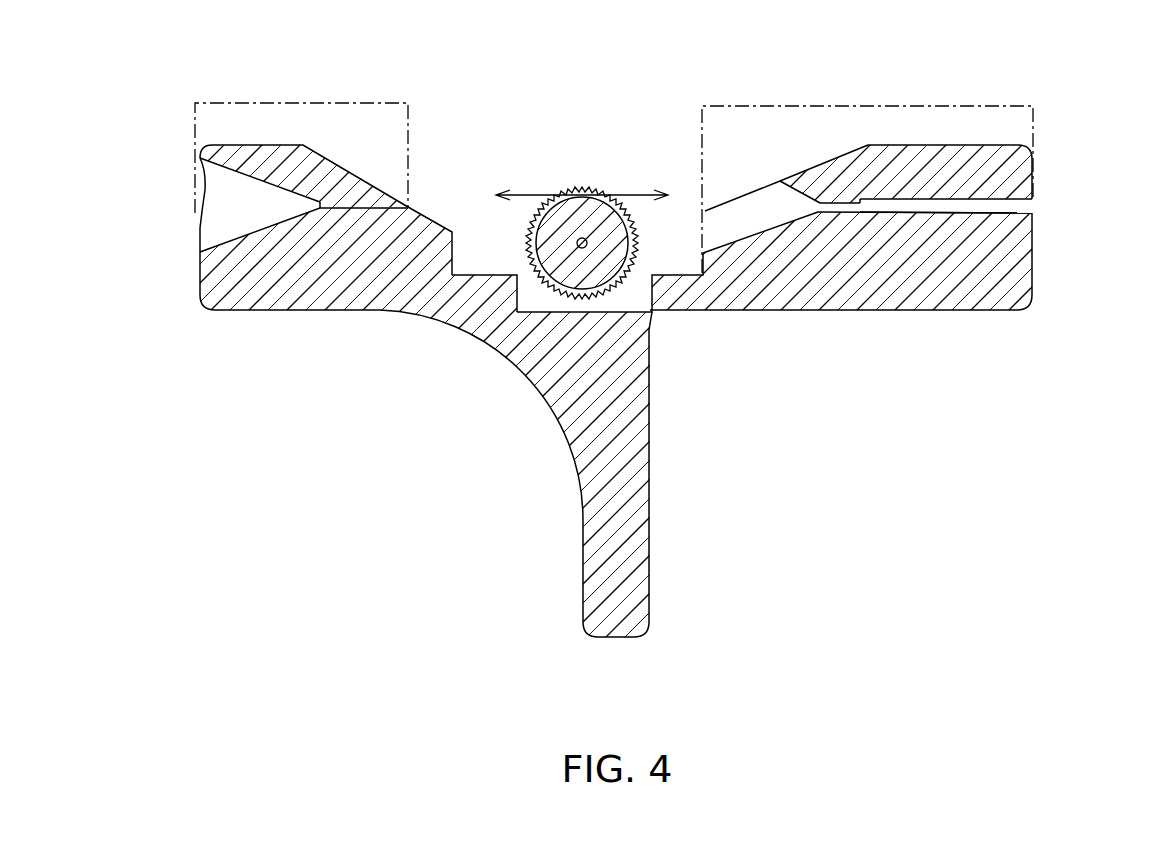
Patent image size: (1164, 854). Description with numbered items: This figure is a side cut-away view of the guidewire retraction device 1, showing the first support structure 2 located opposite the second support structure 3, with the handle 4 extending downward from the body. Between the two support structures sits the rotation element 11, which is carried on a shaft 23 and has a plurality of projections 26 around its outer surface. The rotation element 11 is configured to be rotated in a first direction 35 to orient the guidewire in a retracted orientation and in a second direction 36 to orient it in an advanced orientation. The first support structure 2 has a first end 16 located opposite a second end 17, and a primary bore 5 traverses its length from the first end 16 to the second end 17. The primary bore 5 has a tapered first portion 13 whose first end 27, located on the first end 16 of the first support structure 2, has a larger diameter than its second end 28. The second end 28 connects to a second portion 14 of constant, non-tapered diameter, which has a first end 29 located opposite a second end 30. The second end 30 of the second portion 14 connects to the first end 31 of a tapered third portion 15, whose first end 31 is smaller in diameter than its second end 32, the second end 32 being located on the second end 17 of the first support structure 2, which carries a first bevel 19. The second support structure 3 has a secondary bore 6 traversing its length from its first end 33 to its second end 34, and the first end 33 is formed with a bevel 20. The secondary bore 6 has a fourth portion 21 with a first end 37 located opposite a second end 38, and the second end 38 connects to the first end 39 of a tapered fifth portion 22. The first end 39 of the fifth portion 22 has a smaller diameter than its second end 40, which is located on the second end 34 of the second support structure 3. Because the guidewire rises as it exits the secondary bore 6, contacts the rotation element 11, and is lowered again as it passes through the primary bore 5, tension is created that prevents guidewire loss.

The guidewire retraction device 1 is at (487, 122).
The first support structure 2 is at (870, 311).
The second support structure 3 is at (270, 309).
The handle 4 is at (650, 532).
The primary bore 5 is at (872, 104).
The secondary bore 6 is at (278, 103).
The rotation element 11 is at (584, 214).
The first portion 13 is at (942, 203).
The second portion 14 is at (842, 213).
The third portion 15 is at (762, 220).
The first end 16 is at (1035, 265).
The second end 17 is at (703, 265).
The first bevel 19 is at (789, 178).
The bevel 20 is at (425, 215).
The fourth portion 21 is at (357, 195).
The fifth portion 22 is at (227, 187).
The shaft 23 is at (579, 247).
The plurality of projections 26 is at (581, 187).
The first end 27 is at (1038, 212).
The second end 28 is at (872, 213).
The first end 29 is at (857, 210).
The second end 30 is at (825, 203).
The first end 31 is at (812, 195).
The second end 32 is at (732, 217).
The first end 33 is at (453, 252).
The second end 34 is at (200, 280).
The first direction 35 is at (637, 190).
The second direction 36 is at (523, 193).
The first end 37 is at (397, 208).
The second end 38 is at (323, 208).
The first end 39 is at (306, 210).
The second end 40 is at (212, 245).